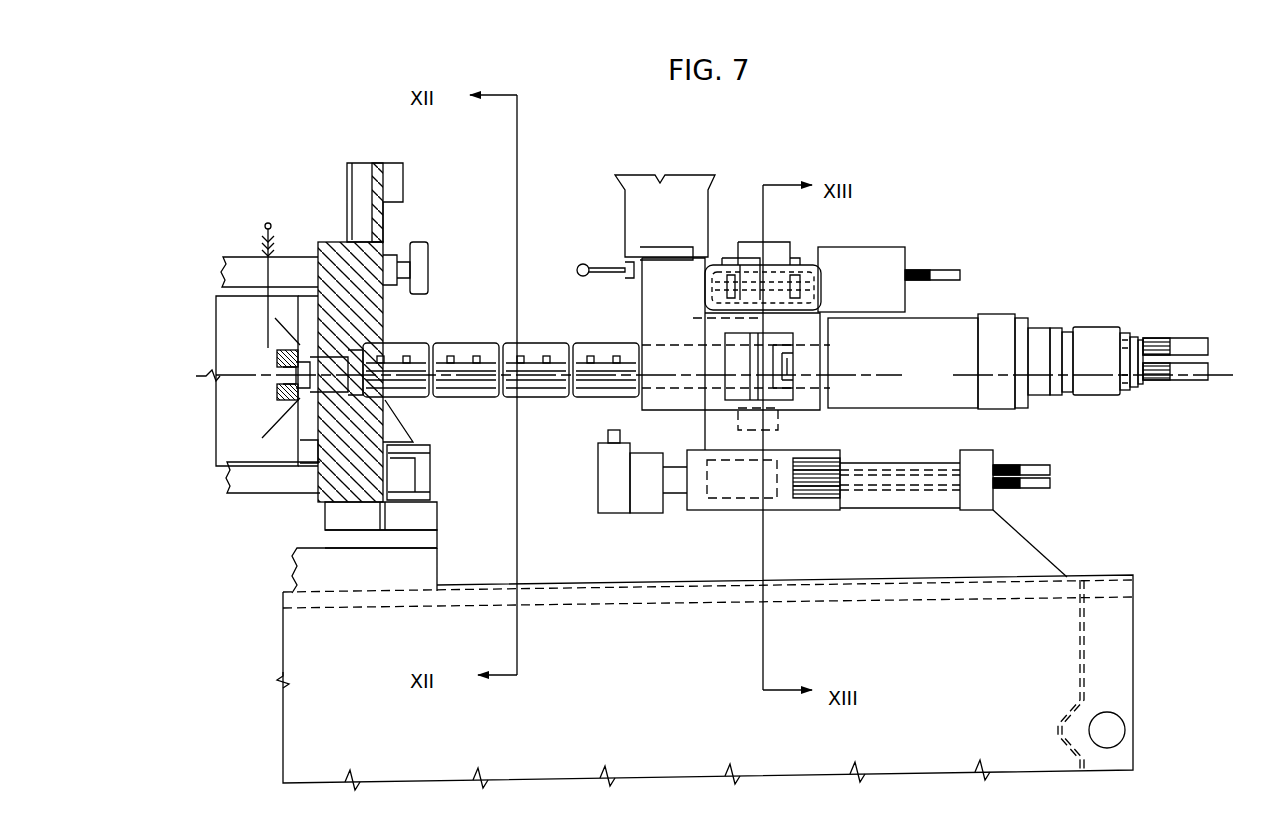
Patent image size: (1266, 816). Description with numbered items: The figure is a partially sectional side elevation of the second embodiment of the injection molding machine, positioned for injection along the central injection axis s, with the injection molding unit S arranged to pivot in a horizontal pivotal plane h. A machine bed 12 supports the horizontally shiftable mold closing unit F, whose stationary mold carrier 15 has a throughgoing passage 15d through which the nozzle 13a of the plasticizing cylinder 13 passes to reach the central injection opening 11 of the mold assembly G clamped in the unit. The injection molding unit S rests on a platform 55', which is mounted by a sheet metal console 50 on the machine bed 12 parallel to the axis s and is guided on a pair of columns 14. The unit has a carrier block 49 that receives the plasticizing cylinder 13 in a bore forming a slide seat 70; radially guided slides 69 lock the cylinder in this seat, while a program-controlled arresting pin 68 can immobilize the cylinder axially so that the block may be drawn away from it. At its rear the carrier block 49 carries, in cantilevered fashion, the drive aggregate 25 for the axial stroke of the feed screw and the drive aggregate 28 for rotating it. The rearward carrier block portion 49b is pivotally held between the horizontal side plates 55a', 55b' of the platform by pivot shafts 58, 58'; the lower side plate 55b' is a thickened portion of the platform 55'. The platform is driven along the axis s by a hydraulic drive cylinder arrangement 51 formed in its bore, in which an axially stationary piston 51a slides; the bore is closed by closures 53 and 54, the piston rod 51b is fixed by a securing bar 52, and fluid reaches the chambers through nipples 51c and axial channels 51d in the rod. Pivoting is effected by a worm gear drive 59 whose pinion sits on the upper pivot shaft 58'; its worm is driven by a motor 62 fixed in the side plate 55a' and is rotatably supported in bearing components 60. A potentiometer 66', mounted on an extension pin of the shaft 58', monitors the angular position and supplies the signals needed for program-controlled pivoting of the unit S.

The central injection opening 11 is at (283, 373).
The machine bed 12 is at (702, 714).
The plasticizing cylinder 13 is at (468, 353).
The nozzle 13a is at (261, 378).
The columns 14 is at (673, 483).
The stationary mold carrier 15 is at (362, 162).
The throughgoing passage 15d is at (380, 335).
The drive aggregate 25 is at (903, 337).
The drive aggregate 28 is at (1090, 340).
The carrier block 49 is at (640, 406).
The rearward carrier block portion 49b is at (818, 420).
The console 50 is at (1012, 557).
The rail 51 is at (818, 513).
The piston 51a is at (832, 464).
The piston rod 51b is at (915, 472).
The nipples 51c is at (1038, 492).
The axial channels 51d is at (955, 470).
The securing bar 52 is at (647, 477).
The closure 53 is at (697, 490).
The closure 54 is at (838, 504).
The platform 55' is at (864, 389).
The side plate 55a' is at (850, 283).
The lower side plate 55b' is at (787, 497).
The pivot shaft 58 is at (757, 439).
The upper pivot shaft 58' is at (698, 331).
The worm gear drive 59 is at (781, 268).
The bearing components 60 is at (725, 262).
The motor 62 is at (835, 260).
The potentiometer 66' is at (763, 257).
The arresting pin 68 is at (592, 470).
The slides 69 is at (755, 392).
The slide seat 70 is at (675, 383).
The mold closing unit F is at (247, 207).
The mold assembly G is at (172, 345).
The injection molding unit S is at (772, 200).
The horizontal pivotal plane h is at (160, 376).
The central injection axis s is at (712, 369).